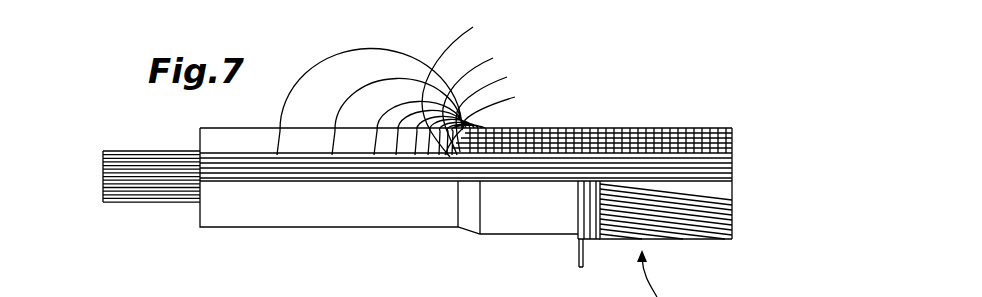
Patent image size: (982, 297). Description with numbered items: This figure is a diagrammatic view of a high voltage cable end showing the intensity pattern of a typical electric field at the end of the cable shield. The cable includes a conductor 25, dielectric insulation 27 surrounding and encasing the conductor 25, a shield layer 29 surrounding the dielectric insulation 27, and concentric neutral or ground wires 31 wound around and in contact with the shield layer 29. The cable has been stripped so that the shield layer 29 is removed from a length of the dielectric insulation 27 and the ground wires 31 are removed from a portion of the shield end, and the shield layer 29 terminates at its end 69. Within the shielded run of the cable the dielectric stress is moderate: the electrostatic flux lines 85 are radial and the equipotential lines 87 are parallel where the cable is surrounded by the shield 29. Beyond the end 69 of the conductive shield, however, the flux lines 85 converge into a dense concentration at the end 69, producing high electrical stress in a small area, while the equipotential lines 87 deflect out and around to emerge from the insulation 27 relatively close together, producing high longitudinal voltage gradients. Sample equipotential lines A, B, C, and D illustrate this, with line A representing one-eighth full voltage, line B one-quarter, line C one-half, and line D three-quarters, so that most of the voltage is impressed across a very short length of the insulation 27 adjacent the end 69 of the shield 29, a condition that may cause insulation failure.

The conductor 25 is at (103, 180).
The dielectric insulation 27 is at (247, 228).
The shield layer 29 is at (506, 236).
The ground wires 31 is at (690, 228).
The end of the shield layer 69 is at (460, 207).
The electrostatic flux lines 85 is at (377, 82).
The equipotential lines 87 is at (495, 98).
The sample equipotential line A is at (496, 106).
The sample equipotential line B is at (489, 105).
The sample equipotential line C is at (476, 98).
The sample equipotential line D is at (456, 83).